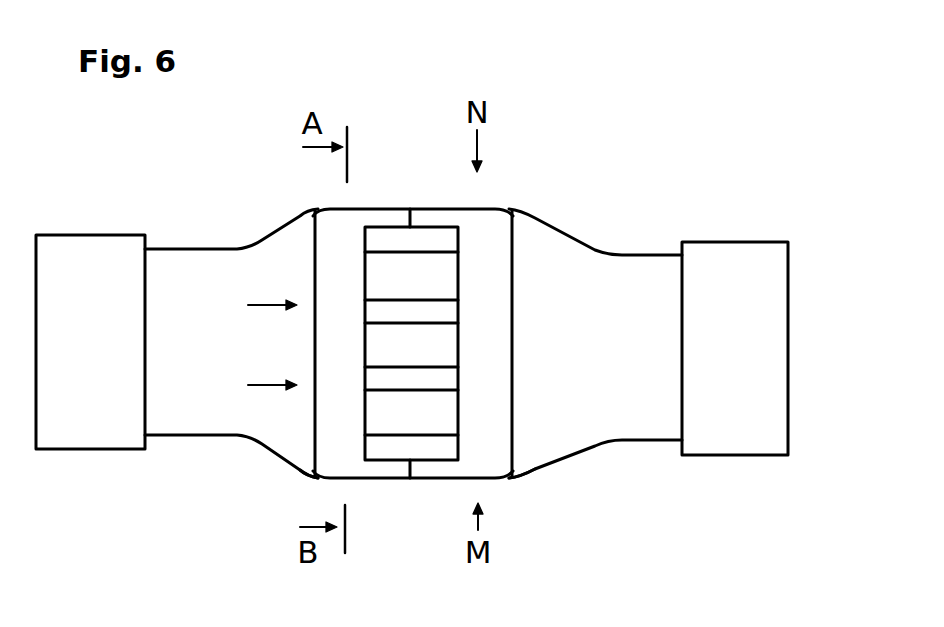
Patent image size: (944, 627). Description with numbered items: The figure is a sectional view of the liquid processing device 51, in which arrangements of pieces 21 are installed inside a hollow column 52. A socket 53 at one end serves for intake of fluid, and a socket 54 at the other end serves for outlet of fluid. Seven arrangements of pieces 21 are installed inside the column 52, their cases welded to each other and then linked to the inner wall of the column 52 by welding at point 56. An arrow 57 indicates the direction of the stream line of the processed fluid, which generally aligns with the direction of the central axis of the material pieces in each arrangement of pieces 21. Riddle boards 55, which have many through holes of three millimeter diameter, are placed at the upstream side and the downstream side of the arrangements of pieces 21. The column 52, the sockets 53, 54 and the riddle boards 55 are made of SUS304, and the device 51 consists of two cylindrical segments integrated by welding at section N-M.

The liquid processing device 51 is at (597, 178).
The hollow column 52 is at (245, 243).
The socket 53 is at (77, 450).
The socket 54 is at (733, 457).
The arrangement of pieces 21 is at (388, 238).
The riddle board 55 is at (310, 440).
The welding point 56 is at (407, 470).
The arrow 57 is at (238, 287).